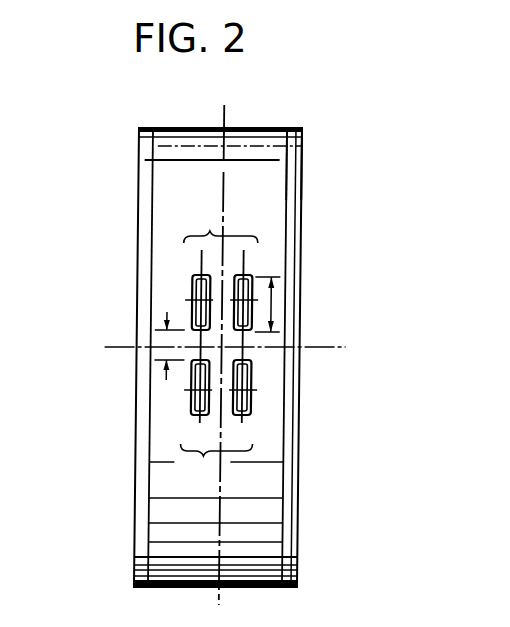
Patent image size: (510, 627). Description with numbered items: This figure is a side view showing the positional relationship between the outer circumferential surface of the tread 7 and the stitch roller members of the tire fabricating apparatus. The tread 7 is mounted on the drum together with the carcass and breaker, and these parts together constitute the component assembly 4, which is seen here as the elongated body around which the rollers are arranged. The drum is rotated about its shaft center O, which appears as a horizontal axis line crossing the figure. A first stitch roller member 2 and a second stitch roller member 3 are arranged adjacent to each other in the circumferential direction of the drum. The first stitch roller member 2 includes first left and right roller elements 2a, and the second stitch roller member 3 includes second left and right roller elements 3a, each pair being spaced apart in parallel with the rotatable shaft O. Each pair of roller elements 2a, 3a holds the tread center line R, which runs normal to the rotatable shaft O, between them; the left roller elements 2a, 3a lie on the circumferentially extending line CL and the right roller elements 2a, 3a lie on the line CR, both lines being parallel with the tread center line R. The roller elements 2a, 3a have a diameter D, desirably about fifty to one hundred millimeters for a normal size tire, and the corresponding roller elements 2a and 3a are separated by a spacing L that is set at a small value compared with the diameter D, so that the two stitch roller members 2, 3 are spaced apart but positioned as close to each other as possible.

The first stitch roller member 2 is at (221, 220).
The first left and right roller elements 2a is at (194, 276).
The second stitch roller member 3 is at (216, 468).
The second left and right roller elements 3a is at (194, 412).
The component assembly 4 is at (308, 226).
The tread 7 is at (303, 170).
The tread center line R is at (228, 112).
The shaft center O is at (334, 347).
The circumferentially extending line CL is at (203, 423).
The circumferentially extending line CR is at (245, 423).
The spacing L is at (154, 353).
The diameter D is at (274, 303).